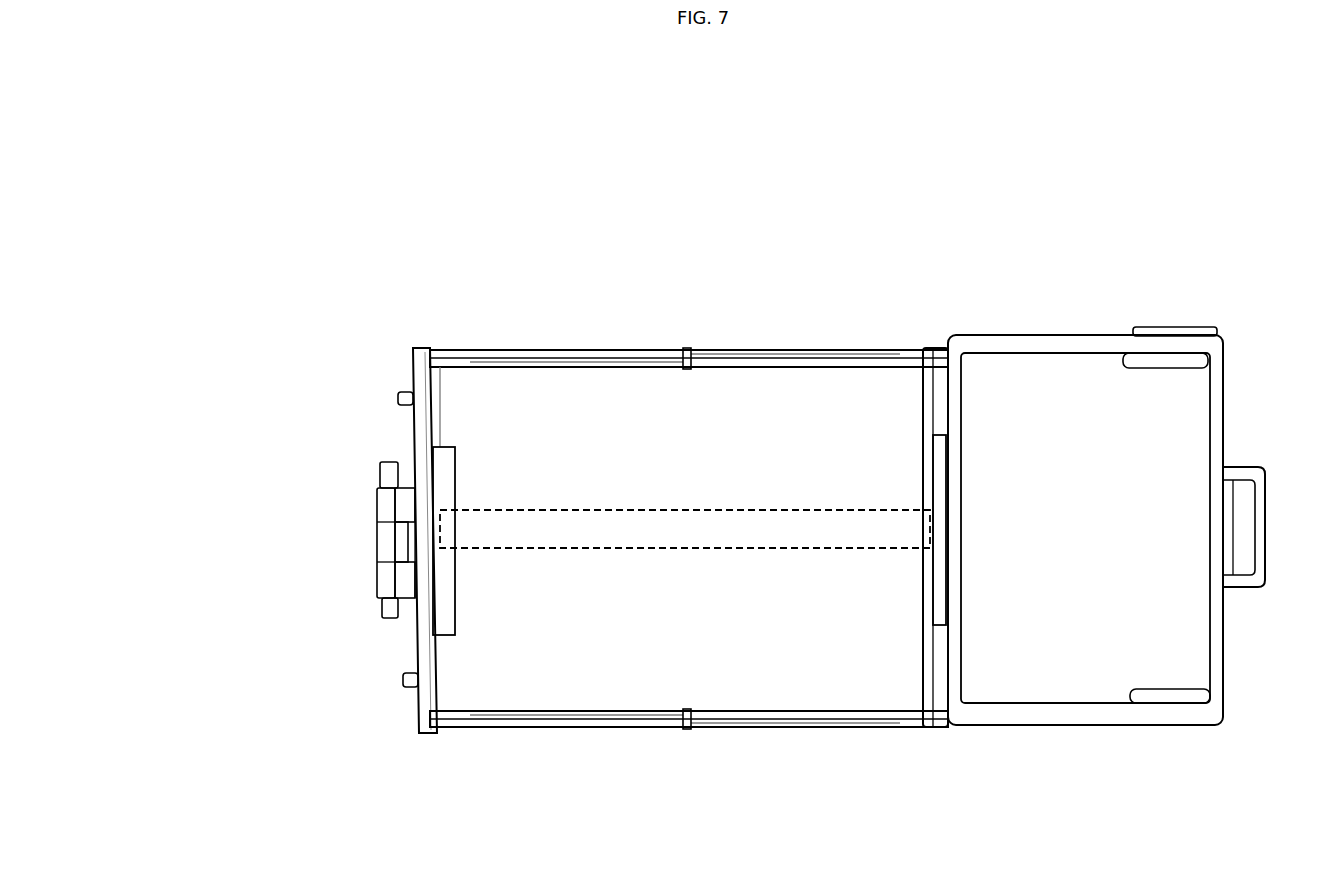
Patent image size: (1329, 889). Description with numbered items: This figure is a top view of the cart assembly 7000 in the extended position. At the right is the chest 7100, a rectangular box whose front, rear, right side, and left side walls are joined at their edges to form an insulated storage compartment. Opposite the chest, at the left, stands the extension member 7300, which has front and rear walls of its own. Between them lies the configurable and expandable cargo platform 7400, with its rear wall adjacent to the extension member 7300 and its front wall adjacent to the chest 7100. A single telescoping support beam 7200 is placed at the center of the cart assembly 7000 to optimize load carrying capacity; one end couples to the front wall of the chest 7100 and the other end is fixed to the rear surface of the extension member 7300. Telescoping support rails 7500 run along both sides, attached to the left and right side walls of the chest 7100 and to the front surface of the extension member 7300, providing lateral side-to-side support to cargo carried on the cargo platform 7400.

The cart assembly 7000 is at (683, 457).
The chest 7100 is at (1134, 499).
The telescoping support beam 7200 is at (994, 597).
The extension member 7300 is at (405, 373).
The cargo platform 7400 is at (689, 606).
The telescoping support rails 7500 is at (689, 486).